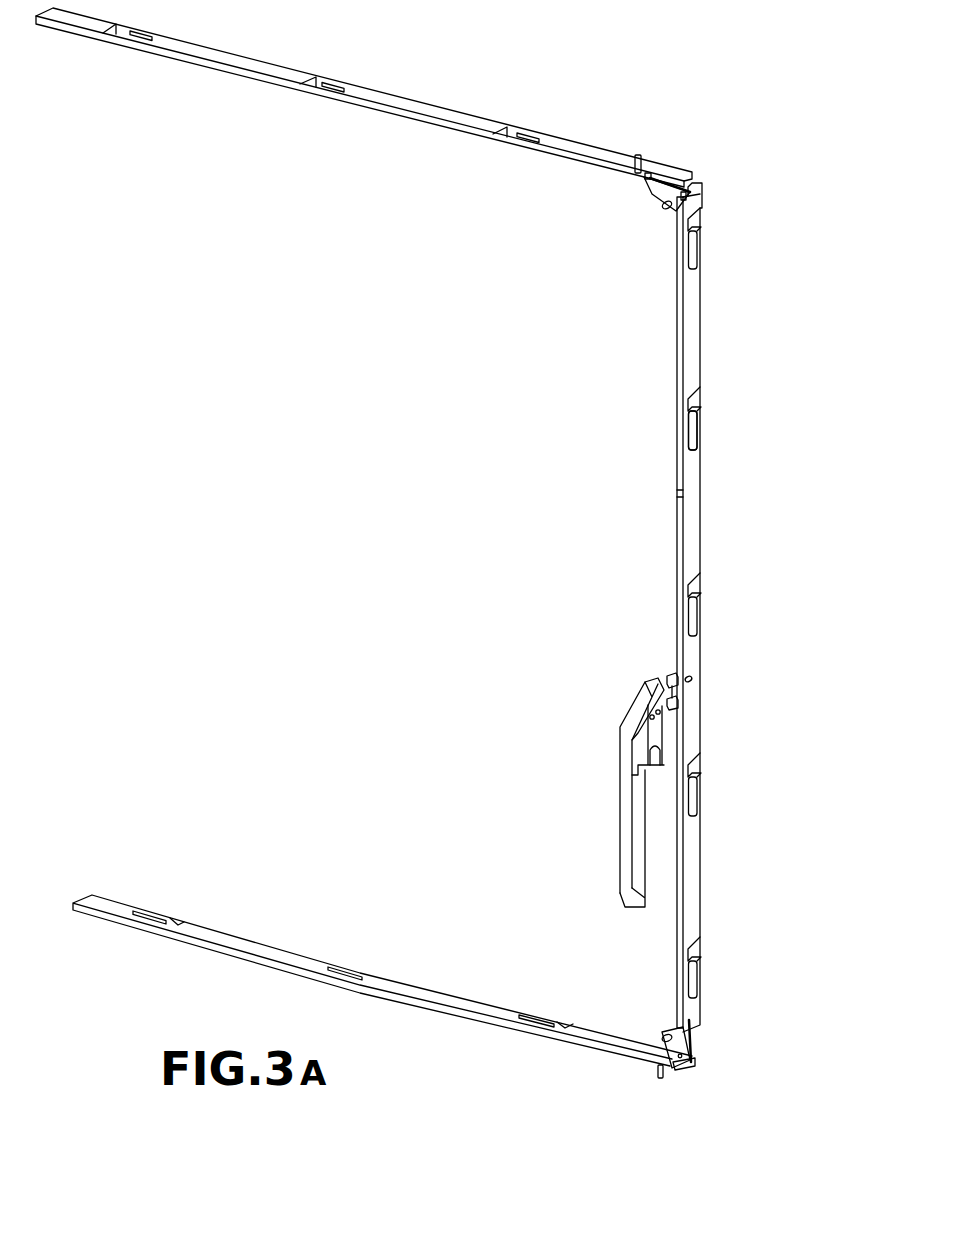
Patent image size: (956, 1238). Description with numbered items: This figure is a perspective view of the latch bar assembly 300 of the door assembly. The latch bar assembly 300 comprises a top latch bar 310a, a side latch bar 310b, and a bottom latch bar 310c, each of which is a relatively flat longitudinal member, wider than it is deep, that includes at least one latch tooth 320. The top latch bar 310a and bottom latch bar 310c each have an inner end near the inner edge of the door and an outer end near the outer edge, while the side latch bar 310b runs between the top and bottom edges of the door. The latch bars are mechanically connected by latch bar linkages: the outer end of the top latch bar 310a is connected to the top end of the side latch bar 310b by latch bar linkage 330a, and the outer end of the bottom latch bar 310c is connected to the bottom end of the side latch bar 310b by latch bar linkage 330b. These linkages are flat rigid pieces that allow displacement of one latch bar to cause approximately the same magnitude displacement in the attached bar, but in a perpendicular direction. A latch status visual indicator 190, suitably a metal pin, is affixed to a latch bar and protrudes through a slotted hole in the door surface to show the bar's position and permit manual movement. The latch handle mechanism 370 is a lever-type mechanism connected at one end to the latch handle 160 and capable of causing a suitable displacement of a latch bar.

The latch bar assembly 300 is at (432, 284).
The top latch bar 310a is at (407, 110).
The side latch bar 310b is at (690, 322).
The bottom latch bar 310c is at (240, 940).
The latch status visual indicator 190 is at (648, 140).
The latch bar linkage 330a is at (660, 198).
The latch bar linkage 330b is at (690, 1040).
The latch tooth 320 is at (690, 397).
The latch handle mechanism 370 is at (656, 664).
The latch handle 160 is at (622, 807).